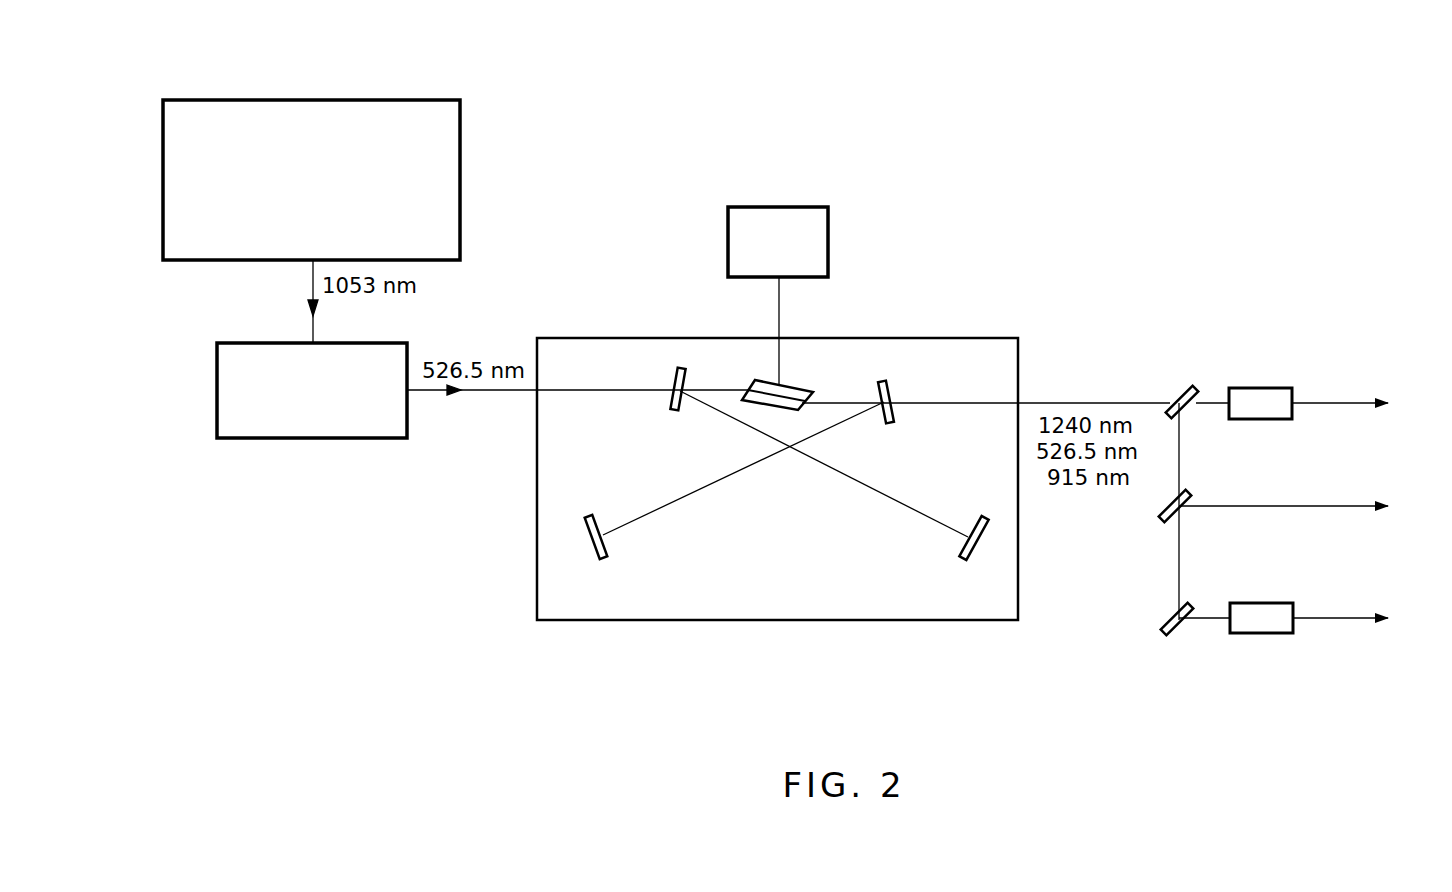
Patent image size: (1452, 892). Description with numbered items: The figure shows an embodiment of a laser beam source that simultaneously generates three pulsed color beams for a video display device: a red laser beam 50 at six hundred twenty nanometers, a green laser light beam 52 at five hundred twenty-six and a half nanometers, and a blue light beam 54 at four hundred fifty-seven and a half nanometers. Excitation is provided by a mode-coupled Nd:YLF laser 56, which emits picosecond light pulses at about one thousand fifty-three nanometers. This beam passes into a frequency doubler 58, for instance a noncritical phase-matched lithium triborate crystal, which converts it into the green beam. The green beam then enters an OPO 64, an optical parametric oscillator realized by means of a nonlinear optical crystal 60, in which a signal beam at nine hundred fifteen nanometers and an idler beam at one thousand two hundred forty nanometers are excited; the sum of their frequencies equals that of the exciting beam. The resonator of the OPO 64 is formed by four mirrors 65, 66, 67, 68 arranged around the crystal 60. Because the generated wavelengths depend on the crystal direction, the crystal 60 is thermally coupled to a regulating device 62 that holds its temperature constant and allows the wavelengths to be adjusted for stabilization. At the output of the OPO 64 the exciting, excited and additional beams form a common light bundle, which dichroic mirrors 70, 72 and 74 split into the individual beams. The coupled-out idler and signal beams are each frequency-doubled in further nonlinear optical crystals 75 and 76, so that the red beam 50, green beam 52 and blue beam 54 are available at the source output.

The pulsed red laser beam 50 is at (1312, 403).
The pulsed green laser light beam 52 is at (1297, 506).
The pulsed blue light beam 54 is at (1300, 617).
The mode-coupled Nd:YLF laser 56 is at (324, 100).
The frequency doubler 58 is at (307, 438).
The crystal 60 is at (766, 378).
The regulating device 62 is at (830, 247).
The OPO 64 is at (960, 348).
The mirror 65 is at (677, 366).
The mirror 66 is at (890, 395).
The mirror 67 is at (598, 553).
The mirror 68 is at (975, 553).
The dichroic mirror 70 is at (1182, 388).
The dichroic mirror 72 is at (1165, 503).
The dichroic mirror 74 is at (1180, 632).
The nonlinear optical crystal 75 is at (1260, 388).
The nonlinear optical crystal 76 is at (1258, 634).